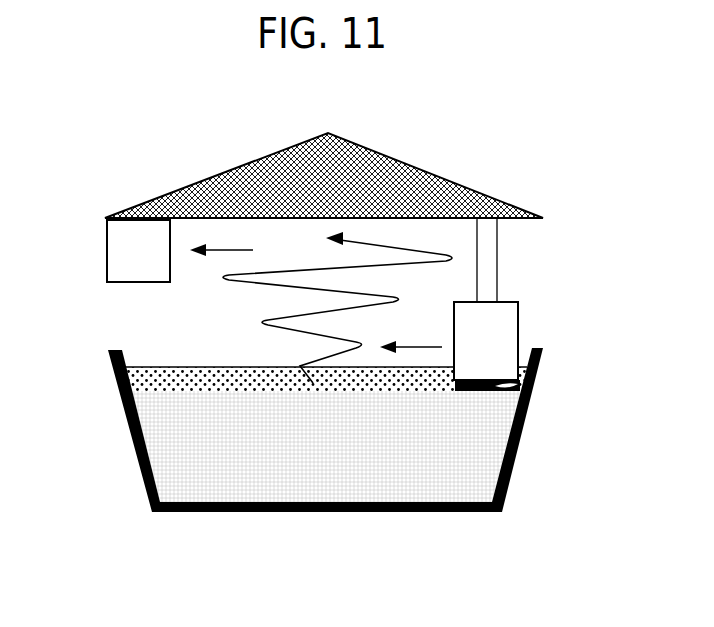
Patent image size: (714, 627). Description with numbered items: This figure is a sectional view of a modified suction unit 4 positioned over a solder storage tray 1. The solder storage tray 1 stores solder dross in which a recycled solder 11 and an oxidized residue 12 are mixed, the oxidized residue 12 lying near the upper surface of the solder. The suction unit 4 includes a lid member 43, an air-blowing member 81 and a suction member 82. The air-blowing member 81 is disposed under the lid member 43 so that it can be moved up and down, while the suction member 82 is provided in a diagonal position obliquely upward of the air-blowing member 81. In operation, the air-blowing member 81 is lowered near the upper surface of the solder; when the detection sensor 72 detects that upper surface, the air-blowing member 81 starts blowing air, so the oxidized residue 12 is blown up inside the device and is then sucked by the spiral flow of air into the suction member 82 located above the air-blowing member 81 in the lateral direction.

The solder storage tray 1 is at (510, 456).
The suction unit 4 is at (416, 136).
The recycled solder 11 is at (303, 484).
The oxidized residue 12 is at (125, 378).
The lid member 43 is at (462, 187).
The detection sensor 72 is at (500, 386).
The air-blowing member 81 is at (518, 325).
The suction member 82 is at (107, 257).